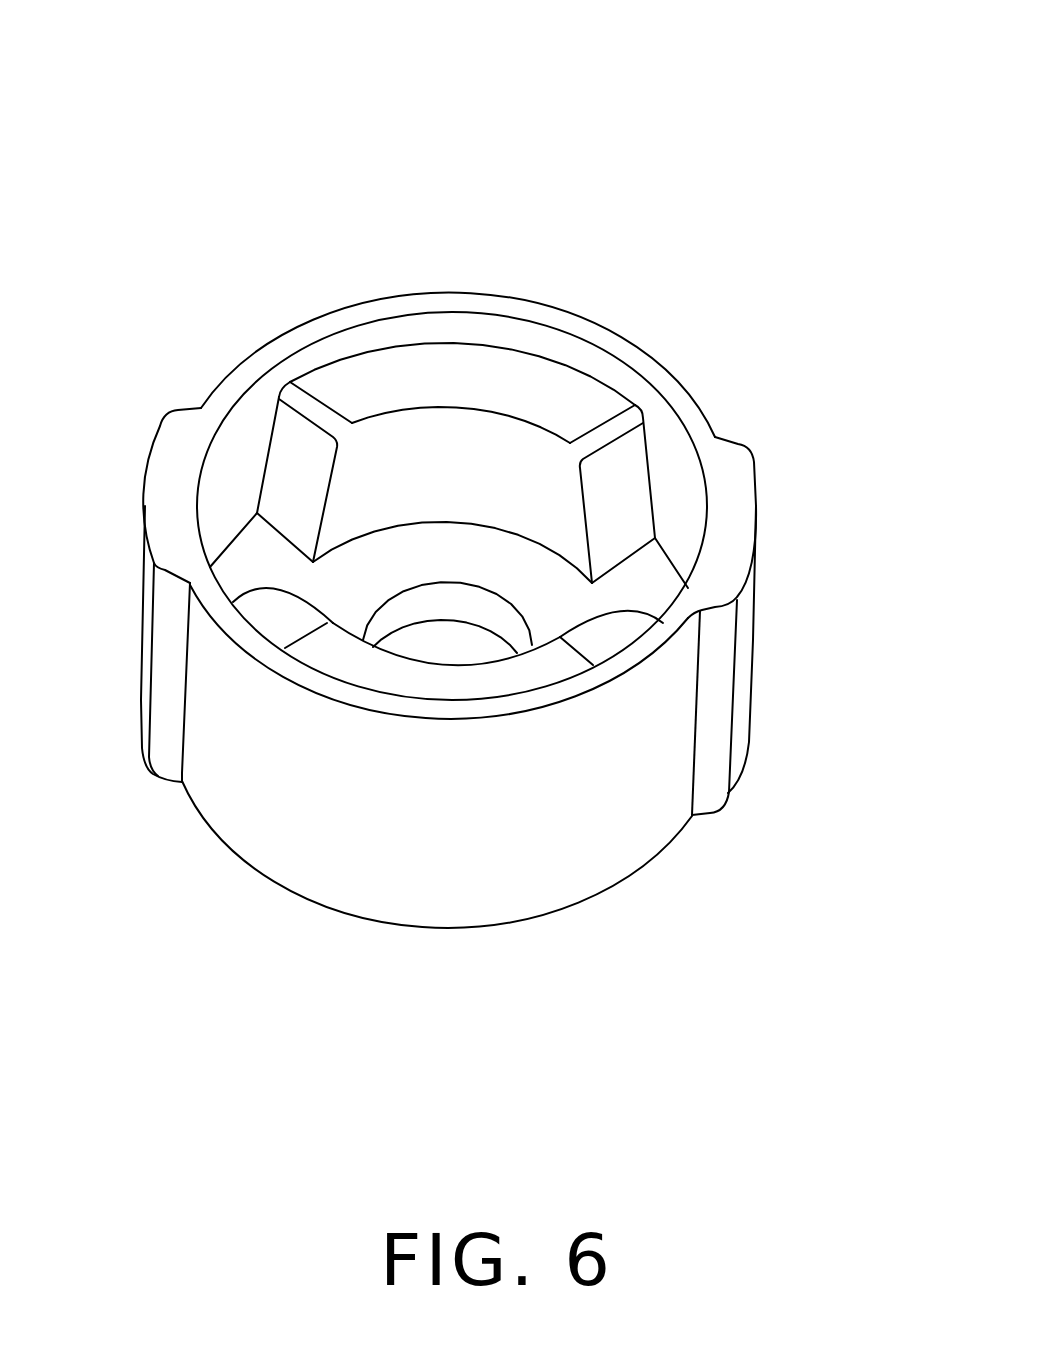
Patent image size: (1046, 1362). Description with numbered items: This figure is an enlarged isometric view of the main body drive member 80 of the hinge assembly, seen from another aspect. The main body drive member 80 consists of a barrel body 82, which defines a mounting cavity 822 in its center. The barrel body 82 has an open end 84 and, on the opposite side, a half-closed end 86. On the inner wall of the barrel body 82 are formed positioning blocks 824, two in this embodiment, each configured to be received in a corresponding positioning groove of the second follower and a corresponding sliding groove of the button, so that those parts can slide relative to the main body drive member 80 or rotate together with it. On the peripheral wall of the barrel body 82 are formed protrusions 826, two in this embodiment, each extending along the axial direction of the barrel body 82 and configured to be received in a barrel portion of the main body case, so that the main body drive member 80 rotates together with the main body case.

The main body drive member 80 is at (479, 35).
The barrel body 82 is at (643, 803).
The mounting cavity 822 is at (691, 536).
The positioning block 824 is at (452, 372).
The protrusion 826 is at (743, 650).
The open end 84 is at (284, 330).
The half-closed end 86 is at (330, 915).